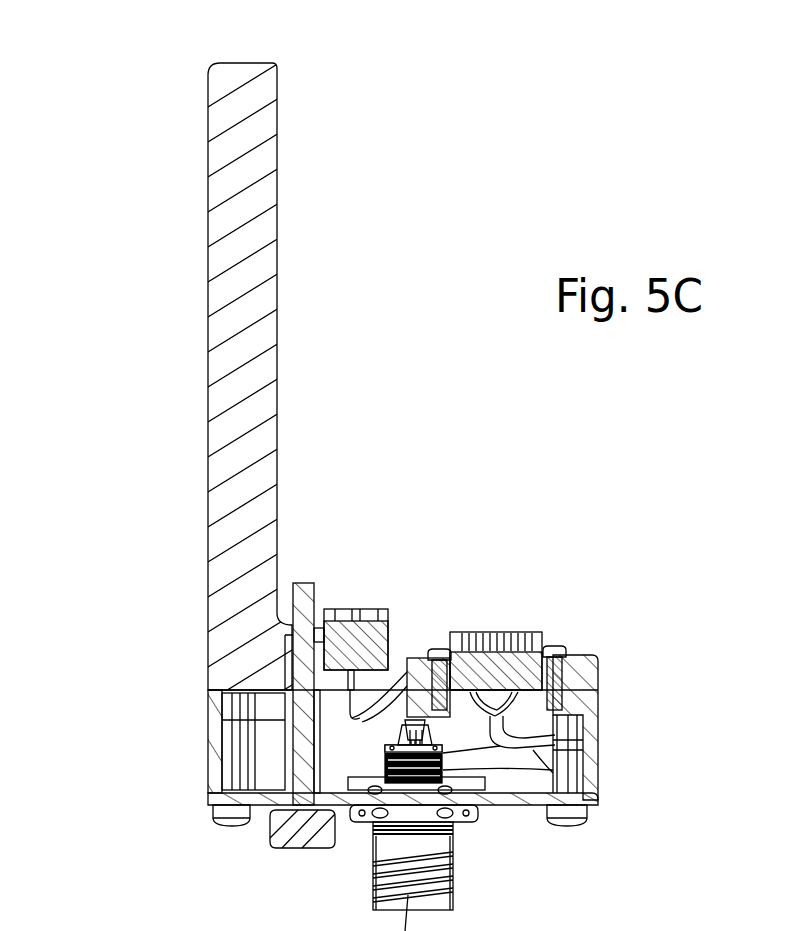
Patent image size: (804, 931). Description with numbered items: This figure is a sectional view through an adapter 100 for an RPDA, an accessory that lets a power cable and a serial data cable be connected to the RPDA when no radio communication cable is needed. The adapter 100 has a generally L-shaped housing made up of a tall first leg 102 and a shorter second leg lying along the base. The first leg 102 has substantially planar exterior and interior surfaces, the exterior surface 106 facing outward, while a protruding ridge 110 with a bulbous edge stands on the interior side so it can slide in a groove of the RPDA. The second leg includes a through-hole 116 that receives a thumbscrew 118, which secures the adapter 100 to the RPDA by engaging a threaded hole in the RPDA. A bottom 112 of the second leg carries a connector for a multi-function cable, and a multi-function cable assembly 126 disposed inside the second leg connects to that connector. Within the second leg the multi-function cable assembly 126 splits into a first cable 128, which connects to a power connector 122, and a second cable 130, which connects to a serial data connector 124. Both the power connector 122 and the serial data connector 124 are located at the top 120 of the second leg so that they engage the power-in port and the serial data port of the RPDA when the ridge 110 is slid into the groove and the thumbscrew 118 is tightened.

The adapter 100 is at (118, 160).
The first leg 102 is at (208, 335).
The exterior surface 106 is at (208, 210).
The protruding ridge 110 is at (269, 223).
The bottom 112 is at (516, 808).
The through-hole 116 is at (208, 720).
The thumbscrew 118 is at (280, 850).
The top 120 is at (588, 655).
The power connector 122 is at (356, 609).
The serial data connector 124 is at (507, 632).
The multi-function cable assembly 126 is at (383, 757).
The first cable 128 is at (412, 660).
The second cable 130 is at (553, 773).